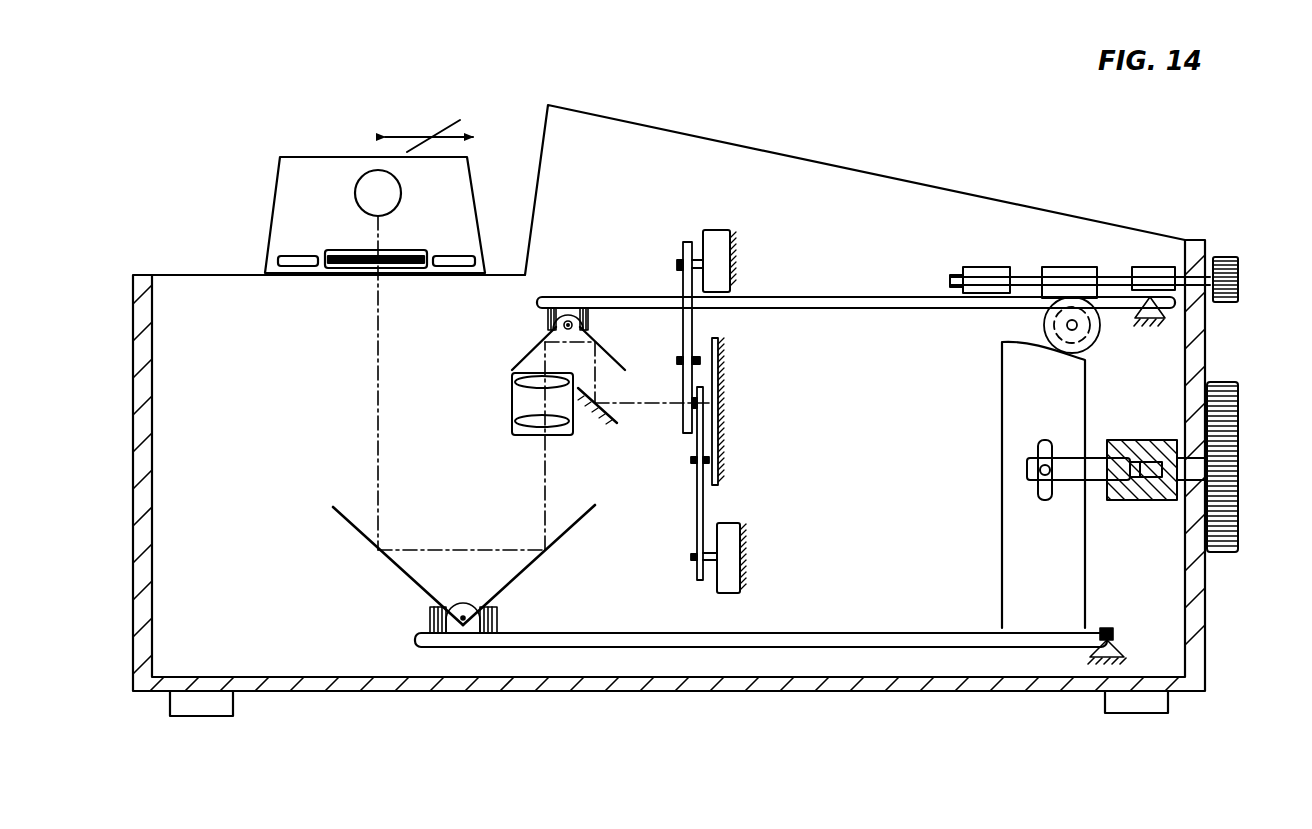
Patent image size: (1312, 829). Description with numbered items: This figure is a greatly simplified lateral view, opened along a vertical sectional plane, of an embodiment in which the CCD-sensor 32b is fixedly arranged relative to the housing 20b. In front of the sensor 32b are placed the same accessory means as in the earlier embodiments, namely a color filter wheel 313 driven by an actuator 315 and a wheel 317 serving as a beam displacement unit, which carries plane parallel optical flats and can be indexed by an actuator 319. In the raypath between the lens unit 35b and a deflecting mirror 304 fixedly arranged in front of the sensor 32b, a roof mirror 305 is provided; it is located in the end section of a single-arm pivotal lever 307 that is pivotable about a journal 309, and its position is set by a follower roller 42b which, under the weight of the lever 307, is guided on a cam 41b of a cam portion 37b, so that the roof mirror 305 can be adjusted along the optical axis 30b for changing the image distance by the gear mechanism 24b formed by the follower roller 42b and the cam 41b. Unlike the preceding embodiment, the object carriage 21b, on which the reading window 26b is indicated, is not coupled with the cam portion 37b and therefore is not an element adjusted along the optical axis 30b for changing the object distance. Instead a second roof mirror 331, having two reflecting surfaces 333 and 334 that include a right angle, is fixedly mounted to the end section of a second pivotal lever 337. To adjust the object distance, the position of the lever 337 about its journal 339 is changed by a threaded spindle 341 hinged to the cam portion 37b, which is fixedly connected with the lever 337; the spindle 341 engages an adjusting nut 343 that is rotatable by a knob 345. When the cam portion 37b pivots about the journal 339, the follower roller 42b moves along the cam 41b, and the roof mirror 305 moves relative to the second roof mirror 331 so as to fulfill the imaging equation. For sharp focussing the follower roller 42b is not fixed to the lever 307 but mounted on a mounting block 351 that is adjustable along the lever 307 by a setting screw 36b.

The housing 20b is at (152, 372).
The object carriage 21b is at (265, 233).
The gear mechanism 24b is at (963, 236).
The reading window/lens 26b is at (362, 178).
The optical axis 30b is at (545, 492).
The CCD-sensor 32b is at (722, 395).
The lens unit 35b is at (512, 410).
The setting screw 36b is at (1272, 222).
The cam portion 37b is at (1024, 444).
The cam 41b is at (1082, 368).
The follower roller 42b is at (1046, 320).
The deflecting mirror 304 is at (598, 425).
The roof mirror 305 is at (522, 355).
The single-arm pivotal lever 307 is at (848, 300).
The journal 309 is at (1148, 318).
The color filter wheel 313 is at (705, 502).
The actuator 315 is at (732, 562).
The wheel 317 is at (695, 320).
The actuator 319 is at (718, 255).
The second roof mirror 331 is at (392, 570).
The reflecting surface 333 is at (356, 504).
The reflecting surface 334 is at (518, 560).
The second pivotal lever 337 is at (696, 630).
The journal 339 is at (1148, 612).
The threaded spindle 341 is at (1072, 478).
The adjusting nut 343 is at (1130, 444).
The knob 345 is at (1240, 468).
The mounting block 351 is at (1072, 267).